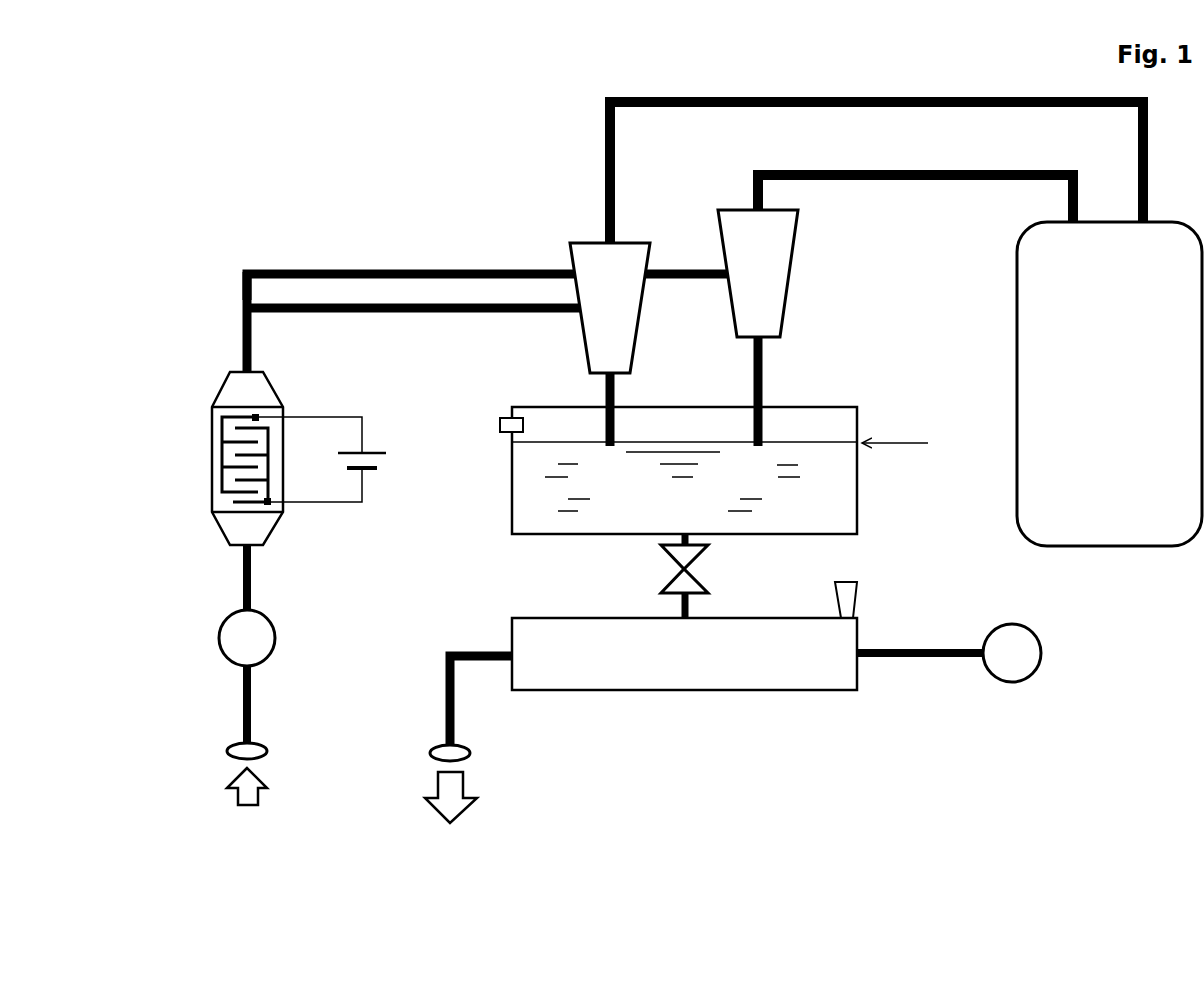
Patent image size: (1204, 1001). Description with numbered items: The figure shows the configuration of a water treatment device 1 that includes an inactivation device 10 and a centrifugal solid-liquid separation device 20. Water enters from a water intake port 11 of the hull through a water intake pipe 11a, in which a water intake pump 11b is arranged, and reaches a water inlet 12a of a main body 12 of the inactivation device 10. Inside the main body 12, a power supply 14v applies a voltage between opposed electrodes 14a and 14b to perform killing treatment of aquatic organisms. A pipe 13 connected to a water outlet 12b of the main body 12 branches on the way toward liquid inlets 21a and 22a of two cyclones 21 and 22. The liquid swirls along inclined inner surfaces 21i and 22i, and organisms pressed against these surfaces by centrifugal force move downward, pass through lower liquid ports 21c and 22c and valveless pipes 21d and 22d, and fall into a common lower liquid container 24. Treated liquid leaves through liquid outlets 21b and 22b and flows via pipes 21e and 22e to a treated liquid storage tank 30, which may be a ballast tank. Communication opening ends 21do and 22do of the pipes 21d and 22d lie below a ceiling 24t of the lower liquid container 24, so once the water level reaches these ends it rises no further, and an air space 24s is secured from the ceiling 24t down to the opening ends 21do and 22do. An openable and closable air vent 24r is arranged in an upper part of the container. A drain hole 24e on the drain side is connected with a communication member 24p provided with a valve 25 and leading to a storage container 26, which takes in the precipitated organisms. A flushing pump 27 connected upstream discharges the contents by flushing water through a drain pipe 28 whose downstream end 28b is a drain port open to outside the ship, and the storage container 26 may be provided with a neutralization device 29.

The water treatment device 1 is at (231, 162).
The inactivation device 10 is at (186, 417).
The water intake port 11 is at (227, 750).
The water intake pipe 11a is at (251, 702).
The water intake pump 11b is at (219, 637).
The main body 12 is at (212, 466).
The water inlet 12a is at (247, 547).
The water outlet 12b is at (243, 370).
The pipe 13 is at (243, 297).
The electrode 14a is at (222, 486).
The electrode 14b is at (270, 491).
The power supply 14v is at (376, 452).
The centrifugal solid-liquid separation device 20 is at (521, 163).
The cyclone 21 is at (593, 293).
The liquid inlet 21a is at (576, 305).
The liquid outlet 21b is at (605, 240).
The lower liquid port 21c is at (606, 380).
The pipe 21d is at (617, 388).
The communication opening end 21do is at (612, 445).
The pipe 21e is at (790, 98).
The inclined inner surface 21i is at (588, 350).
The cyclone 22 is at (742, 258).
The liquid inlet 22a is at (722, 275).
The liquid outlet 22b is at (765, 196).
The lower liquid port 22c is at (762, 345).
The pipe 22d is at (764, 383).
The communication opening end 22do is at (762, 448).
The pipe 22e is at (918, 170).
The inclined inner surface 22i is at (792, 288).
The lower liquid container 24 is at (858, 525).
The drain hole 24e is at (684, 534).
The communication member 24p is at (680, 606).
The air vent 24r is at (503, 425).
The air space 24s is at (820, 425).
The ceiling 24t is at (717, 408).
The valve 25 is at (695, 570).
The storage container 26 is at (671, 664).
The flushing pump 27 is at (1033, 681).
The drain pipe 28 is at (467, 651).
The downstream end 28b is at (471, 753).
The neutralization device 29 is at (858, 597).
The treated liquid storage tank 30 is at (1095, 395).